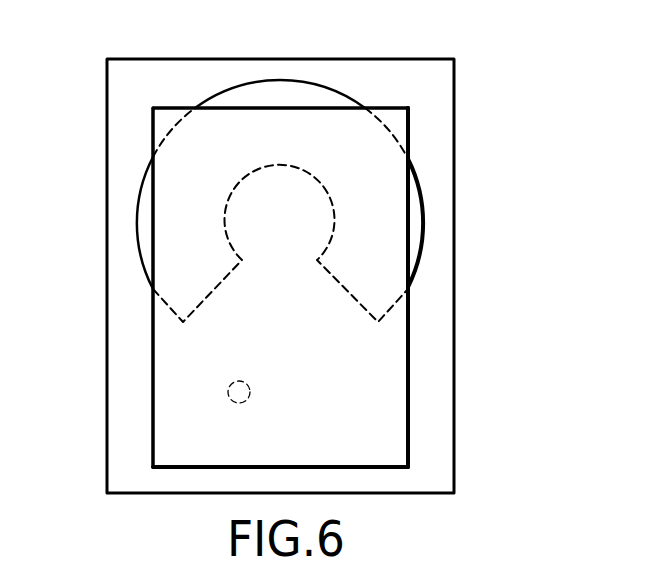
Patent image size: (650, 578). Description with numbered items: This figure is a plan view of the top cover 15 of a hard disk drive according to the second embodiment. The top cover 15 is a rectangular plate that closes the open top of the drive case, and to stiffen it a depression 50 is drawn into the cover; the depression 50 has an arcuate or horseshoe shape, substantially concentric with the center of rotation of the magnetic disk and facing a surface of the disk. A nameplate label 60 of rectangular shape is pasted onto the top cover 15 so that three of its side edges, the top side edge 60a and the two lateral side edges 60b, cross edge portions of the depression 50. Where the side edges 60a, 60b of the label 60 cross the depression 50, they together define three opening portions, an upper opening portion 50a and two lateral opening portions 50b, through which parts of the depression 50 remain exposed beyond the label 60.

The top cover 15 is at (430, 296).
The depression 50 is at (197, 146).
The opening portion 50a is at (282, 83).
The opening portions 50b is at (148, 226).
The nameplate label 60 is at (387, 378).
The side edge 60a is at (383, 108).
The side edges 60b is at (153, 345).